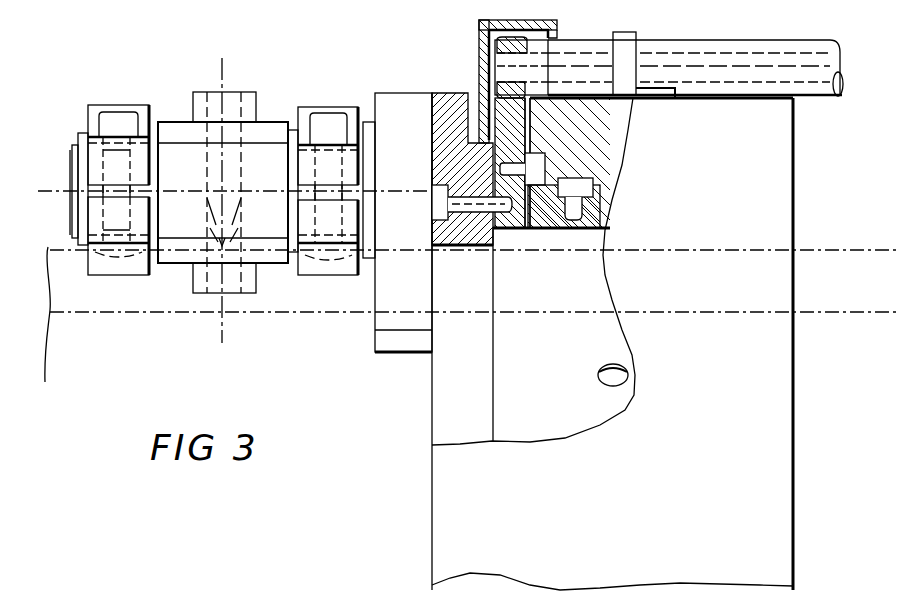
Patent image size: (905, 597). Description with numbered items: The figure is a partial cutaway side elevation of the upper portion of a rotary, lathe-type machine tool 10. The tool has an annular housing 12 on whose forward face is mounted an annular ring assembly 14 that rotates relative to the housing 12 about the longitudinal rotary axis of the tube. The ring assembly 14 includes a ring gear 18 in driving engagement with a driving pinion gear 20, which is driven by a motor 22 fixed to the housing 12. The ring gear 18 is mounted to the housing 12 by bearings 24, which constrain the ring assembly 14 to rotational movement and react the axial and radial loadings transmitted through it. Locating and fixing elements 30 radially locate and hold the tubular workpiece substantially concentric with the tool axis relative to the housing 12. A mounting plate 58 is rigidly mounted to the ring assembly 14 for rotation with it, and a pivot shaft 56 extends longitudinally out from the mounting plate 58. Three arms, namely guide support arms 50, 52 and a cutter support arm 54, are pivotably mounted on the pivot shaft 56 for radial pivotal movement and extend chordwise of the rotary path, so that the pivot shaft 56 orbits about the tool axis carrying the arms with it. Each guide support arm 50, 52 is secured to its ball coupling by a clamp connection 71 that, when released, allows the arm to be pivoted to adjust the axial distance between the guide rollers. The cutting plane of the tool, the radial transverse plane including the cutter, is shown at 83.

The rotary lathe-type machine tool 10 is at (846, 445).
The annular housing 12 is at (795, 200).
The annular ring assembly 14 is at (446, 94).
The ring gear 18 is at (515, 120).
The driving pinion gear 20 is at (492, 40).
The motor 22 is at (697, 50).
The bearings 24 is at (540, 166).
The locating and fixing elements 30 is at (600, 375).
The guide support arm 50 is at (350, 110).
The guide support arm 52 is at (150, 108).
The cutter support arm 54 is at (250, 112).
The pivot shaft 56 is at (73, 195).
The mounting plate 58 is at (376, 333).
The clamp connection 71 is at (95, 152).
The cutting plane 83 is at (220, 319).